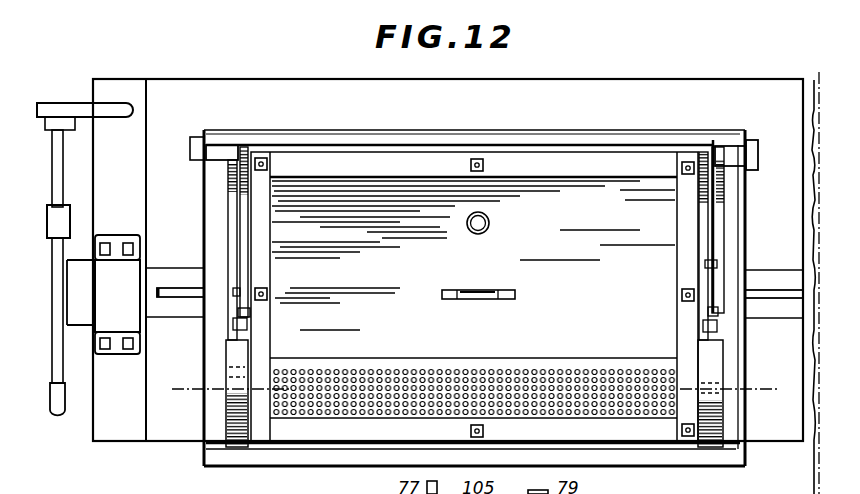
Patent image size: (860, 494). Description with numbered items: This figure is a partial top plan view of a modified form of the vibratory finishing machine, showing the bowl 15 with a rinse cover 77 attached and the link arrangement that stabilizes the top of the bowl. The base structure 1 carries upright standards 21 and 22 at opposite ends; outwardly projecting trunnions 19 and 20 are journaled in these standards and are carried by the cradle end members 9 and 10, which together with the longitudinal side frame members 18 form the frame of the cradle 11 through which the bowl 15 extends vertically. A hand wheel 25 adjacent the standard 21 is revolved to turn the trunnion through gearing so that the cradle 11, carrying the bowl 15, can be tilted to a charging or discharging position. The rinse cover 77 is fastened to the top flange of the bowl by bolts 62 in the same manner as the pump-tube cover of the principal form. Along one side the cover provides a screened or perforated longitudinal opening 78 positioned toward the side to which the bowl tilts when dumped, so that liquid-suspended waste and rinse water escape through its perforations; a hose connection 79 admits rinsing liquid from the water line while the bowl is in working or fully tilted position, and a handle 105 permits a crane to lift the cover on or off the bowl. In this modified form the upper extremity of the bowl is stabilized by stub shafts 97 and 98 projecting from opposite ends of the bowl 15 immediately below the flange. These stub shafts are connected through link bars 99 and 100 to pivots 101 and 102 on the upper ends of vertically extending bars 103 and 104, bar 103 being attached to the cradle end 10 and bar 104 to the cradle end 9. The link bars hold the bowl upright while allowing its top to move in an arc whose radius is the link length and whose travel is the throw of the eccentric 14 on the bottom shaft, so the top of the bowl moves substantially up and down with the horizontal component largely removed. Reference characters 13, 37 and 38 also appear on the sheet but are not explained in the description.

The base structure 1 is at (537, 93).
The cradle end member 9 is at (203, 186).
The cradle end member 10 is at (738, 218).
The cradle 11 is at (411, 124).
The section line 13- 13 is at (818, 53).
The eccentric weight 14 is at (183, 396).
The bowl 15 is at (614, 154).
The longitudinal side frame members 18 is at (538, 141).
The trunnion 19 is at (179, 274).
The trunnion 20 is at (780, 277).
The upright standard 21 is at (117, 273).
The upright standard 22 is at (806, 420).
The hand wheel 25 is at (53, 106).
The left slide block 37 is at (238, 400).
The right slide block 38 is at (712, 367).
The bolts 62 is at (483, 171).
The rinse cover 77 is at (327, 193).
The perforated longitudinal opening 78 is at (337, 383).
The hose connection 79 is at (470, 234).
The stub shaft 97 is at (707, 283).
The stub shaft 98 is at (249, 300).
The link bar 99 is at (722, 192).
The link bar 100 is at (241, 217).
The pivot 101 is at (727, 158).
The pivot 102 is at (217, 147).
The vertically extending bar 103 is at (760, 143).
The vertically extending bar 104 is at (190, 137).
The handle 105 is at (493, 290).